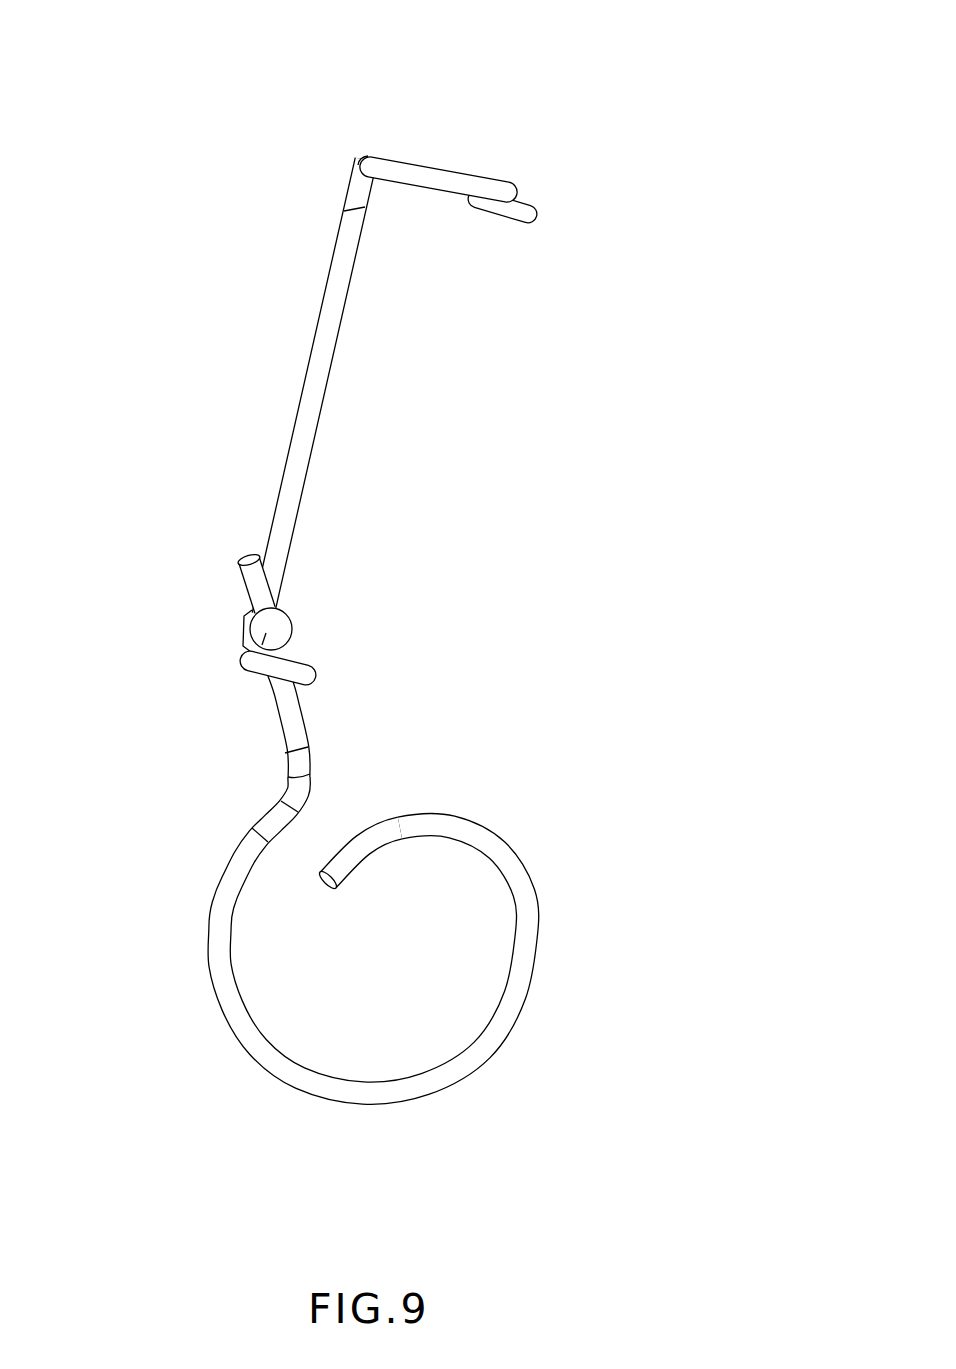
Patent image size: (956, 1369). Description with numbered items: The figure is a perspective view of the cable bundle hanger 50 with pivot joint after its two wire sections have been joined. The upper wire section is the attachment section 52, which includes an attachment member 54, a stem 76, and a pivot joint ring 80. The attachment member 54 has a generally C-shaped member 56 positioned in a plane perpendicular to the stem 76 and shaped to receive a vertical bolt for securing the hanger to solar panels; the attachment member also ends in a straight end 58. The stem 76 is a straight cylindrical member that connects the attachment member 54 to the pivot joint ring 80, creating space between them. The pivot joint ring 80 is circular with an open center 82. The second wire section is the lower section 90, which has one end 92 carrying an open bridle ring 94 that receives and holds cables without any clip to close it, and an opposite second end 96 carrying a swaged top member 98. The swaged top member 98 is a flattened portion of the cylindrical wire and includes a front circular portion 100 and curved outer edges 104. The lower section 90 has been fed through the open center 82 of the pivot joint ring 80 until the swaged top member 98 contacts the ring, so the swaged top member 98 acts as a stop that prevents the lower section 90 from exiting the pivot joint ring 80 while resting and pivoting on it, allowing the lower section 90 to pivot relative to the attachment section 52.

The cable bundle hanger 50 is at (232, 84).
The attachment section 52 is at (360, 198).
The attachment member 54 is at (362, 153).
The C-shaped member 56 is at (445, 165).
The hook end 58 is at (530, 202).
The stem 76 is at (316, 389).
The pivot joint ring 80 is at (296, 667).
The open center 82 is at (265, 676).
The lower section 90 is at (222, 895).
The one end 92 is at (370, 840).
The open bridle ring 94 is at (512, 873).
The second end 96 is at (250, 578).
The swaged top member 98 is at (267, 632).
The front circular portion 100 is at (273, 620).
The curved outer edges 104 is at (246, 624).